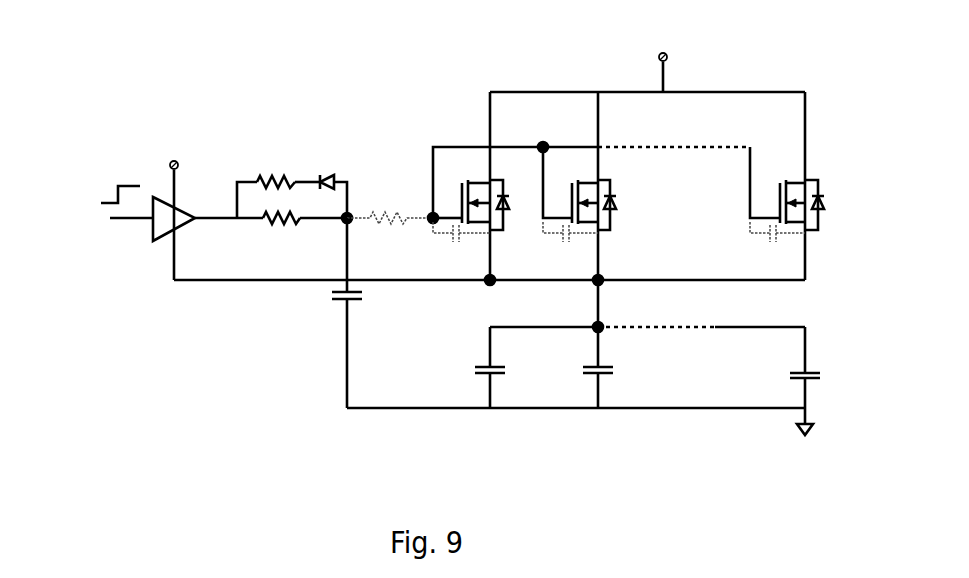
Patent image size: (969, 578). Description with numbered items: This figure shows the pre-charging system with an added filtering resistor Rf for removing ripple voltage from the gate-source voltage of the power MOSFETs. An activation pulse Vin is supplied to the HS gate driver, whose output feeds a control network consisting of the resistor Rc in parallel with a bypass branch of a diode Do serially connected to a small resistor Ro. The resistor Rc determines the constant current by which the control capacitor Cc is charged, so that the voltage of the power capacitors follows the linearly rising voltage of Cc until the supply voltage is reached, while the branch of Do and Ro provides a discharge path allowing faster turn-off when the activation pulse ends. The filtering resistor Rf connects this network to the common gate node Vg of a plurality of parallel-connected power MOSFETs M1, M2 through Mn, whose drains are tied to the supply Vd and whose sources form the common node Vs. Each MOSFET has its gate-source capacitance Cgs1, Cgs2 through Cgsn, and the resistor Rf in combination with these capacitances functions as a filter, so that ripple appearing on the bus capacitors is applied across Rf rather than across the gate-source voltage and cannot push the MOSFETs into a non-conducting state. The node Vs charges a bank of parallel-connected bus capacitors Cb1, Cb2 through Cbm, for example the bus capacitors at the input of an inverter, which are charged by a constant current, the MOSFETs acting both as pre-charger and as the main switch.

The activation pulse Vin is at (107, 190).
The element HS gate driver is at (188, 208).
The small resistor Ro is at (277, 172).
The diode Do is at (333, 168).
The resistor Rc is at (306, 236).
The filtering resistor Rf is at (381, 236).
The gate voltage Vg is at (424, 202).
The supply voltage Vd is at (655, 56).
The source voltage Vs is at (592, 321).
The power MOSFET M1 is at (506, 212).
The power MOSFET M2 is at (624, 210).
The power MOSFET Mn is at (825, 210).
The gate-source capacitance Cgs1 is at (458, 244).
The gate-source capacitance Cgs2 is at (568, 244).
The gate-source capacitance Cgsn is at (775, 244).
The control capacitor Cc is at (327, 298).
The bus capacitor Cb1 is at (470, 362).
The bus capacitor Cb2 is at (582, 362).
The bus capacitor Cbm is at (787, 368).